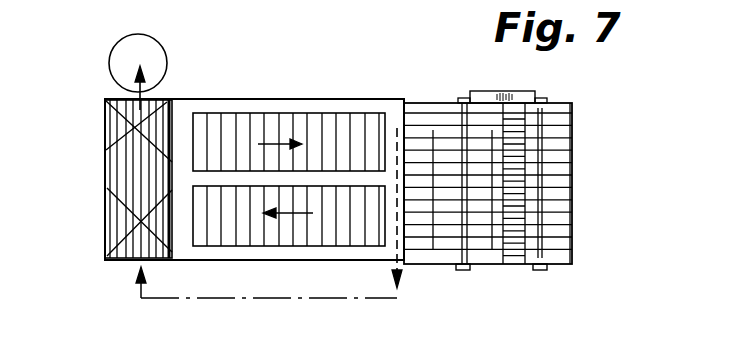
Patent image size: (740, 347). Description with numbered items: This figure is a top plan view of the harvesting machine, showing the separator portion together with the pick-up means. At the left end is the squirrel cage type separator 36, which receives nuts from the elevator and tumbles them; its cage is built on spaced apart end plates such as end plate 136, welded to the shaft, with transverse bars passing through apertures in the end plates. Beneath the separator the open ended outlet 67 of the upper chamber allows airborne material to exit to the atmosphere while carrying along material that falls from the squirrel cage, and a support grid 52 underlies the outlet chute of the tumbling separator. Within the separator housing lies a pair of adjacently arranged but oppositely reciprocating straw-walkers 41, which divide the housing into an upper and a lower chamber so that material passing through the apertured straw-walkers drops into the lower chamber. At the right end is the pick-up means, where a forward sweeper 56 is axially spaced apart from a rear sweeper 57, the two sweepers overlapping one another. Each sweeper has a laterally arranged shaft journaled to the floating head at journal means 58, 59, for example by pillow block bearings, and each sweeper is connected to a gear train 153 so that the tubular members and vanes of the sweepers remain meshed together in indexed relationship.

The support grid 52 is at (165, 50).
The squirrel cage type separator 36 is at (168, 101).
The end plate 136 is at (106, 121).
The open ended outlet 67 is at (231, 128).
The straw-walkers 41 is at (342, 137).
The rear sweeper 57 is at (424, 136).
The gear train 153 is at (496, 93).
The forward sweeper 56 is at (547, 126).
The journal means 59 is at (459, 271).
The journal means 58 is at (536, 271).